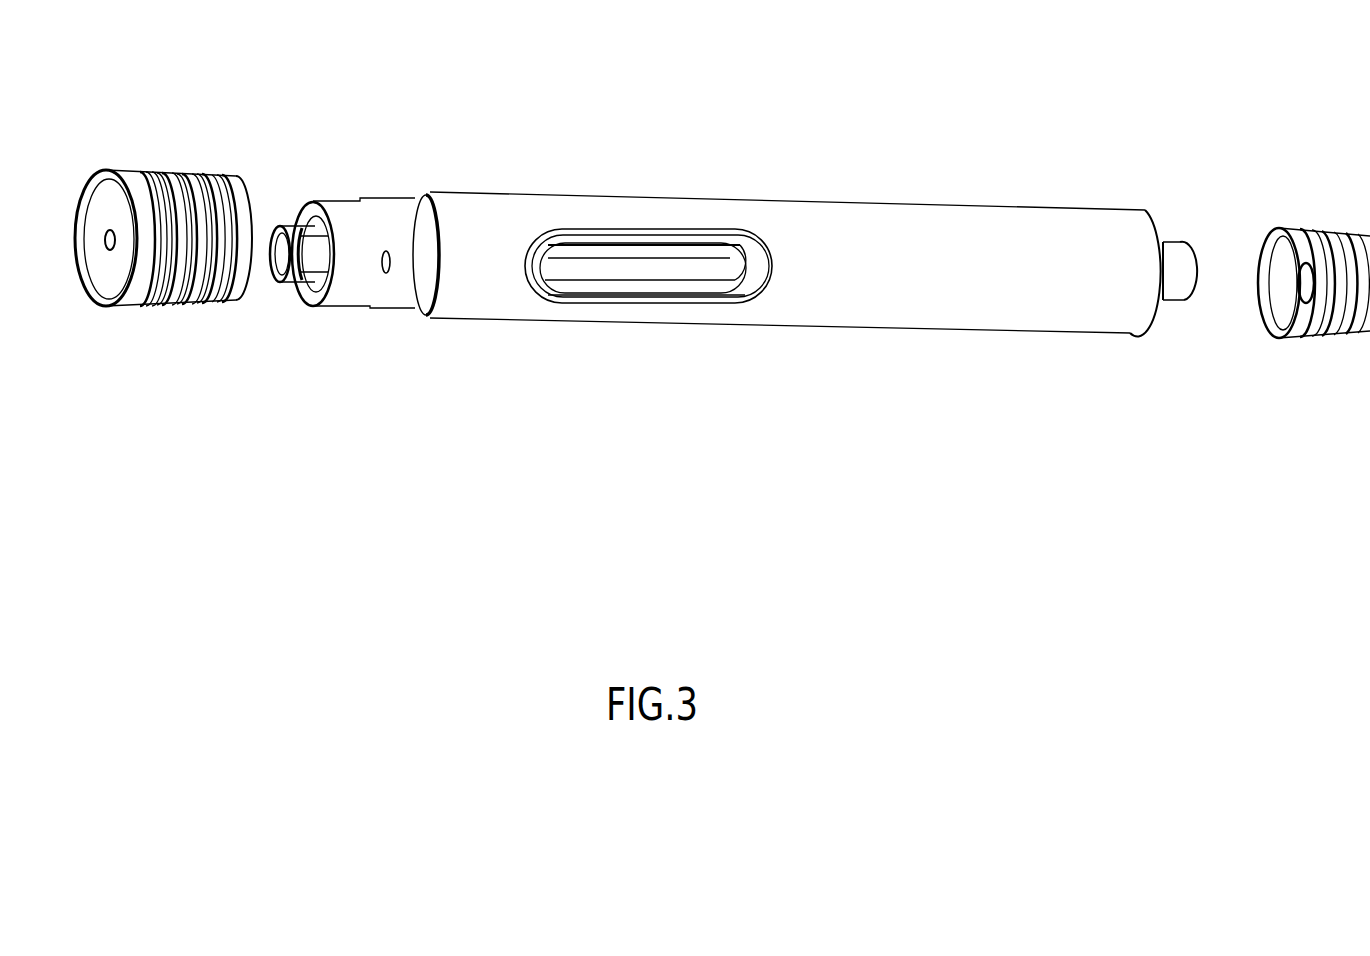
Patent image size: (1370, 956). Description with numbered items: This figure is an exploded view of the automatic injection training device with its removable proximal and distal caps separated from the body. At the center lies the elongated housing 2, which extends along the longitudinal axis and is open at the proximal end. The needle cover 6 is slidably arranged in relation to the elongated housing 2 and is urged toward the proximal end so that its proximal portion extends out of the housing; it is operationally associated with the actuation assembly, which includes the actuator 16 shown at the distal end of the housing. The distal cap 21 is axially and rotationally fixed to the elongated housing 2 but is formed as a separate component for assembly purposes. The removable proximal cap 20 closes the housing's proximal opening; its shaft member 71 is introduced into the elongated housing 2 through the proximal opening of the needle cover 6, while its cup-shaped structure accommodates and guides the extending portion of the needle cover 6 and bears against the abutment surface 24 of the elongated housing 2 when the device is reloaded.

The elongated housing 2 is at (1130, 255).
The needle cover 6 is at (340, 308).
The actuator 16 is at (1170, 245).
The removable proximal cap 20 is at (160, 308).
The distal cap 21 is at (1313, 348).
The abutment surface 24 is at (398, 312).
The shaft member 71 is at (308, 232).